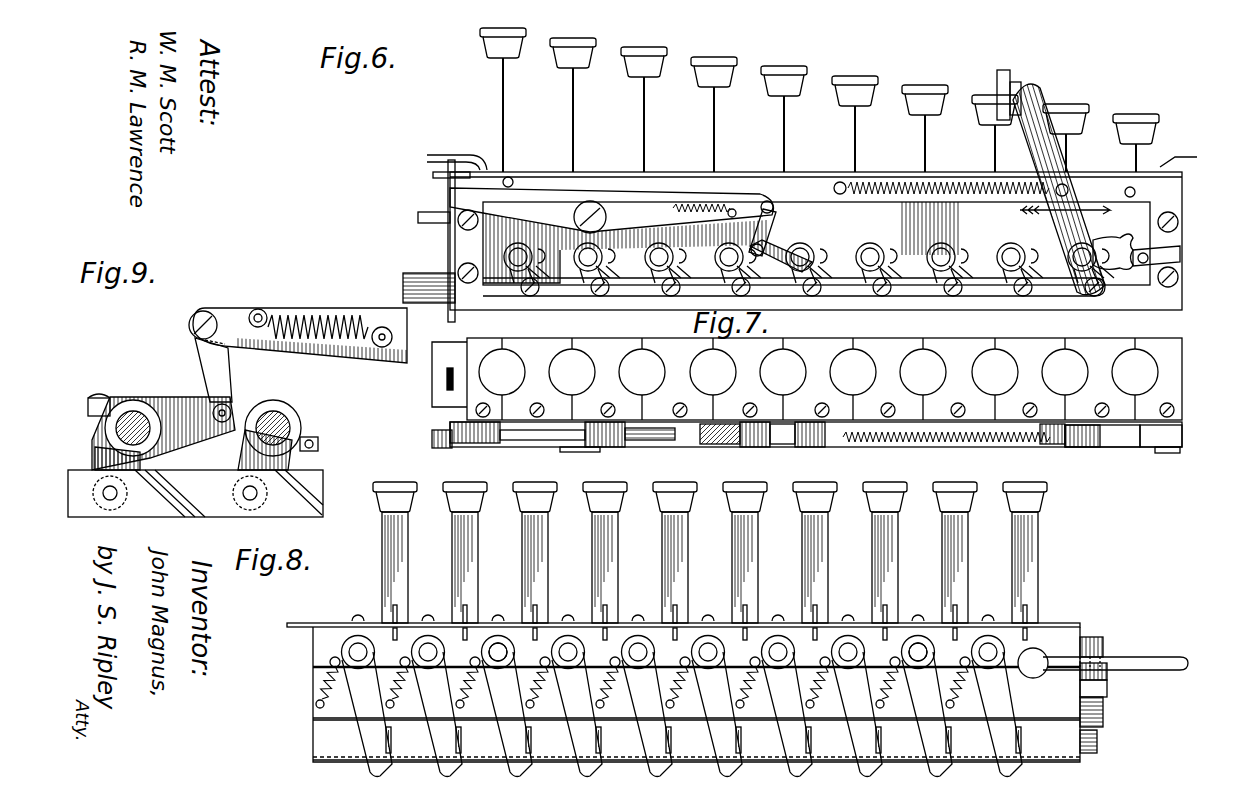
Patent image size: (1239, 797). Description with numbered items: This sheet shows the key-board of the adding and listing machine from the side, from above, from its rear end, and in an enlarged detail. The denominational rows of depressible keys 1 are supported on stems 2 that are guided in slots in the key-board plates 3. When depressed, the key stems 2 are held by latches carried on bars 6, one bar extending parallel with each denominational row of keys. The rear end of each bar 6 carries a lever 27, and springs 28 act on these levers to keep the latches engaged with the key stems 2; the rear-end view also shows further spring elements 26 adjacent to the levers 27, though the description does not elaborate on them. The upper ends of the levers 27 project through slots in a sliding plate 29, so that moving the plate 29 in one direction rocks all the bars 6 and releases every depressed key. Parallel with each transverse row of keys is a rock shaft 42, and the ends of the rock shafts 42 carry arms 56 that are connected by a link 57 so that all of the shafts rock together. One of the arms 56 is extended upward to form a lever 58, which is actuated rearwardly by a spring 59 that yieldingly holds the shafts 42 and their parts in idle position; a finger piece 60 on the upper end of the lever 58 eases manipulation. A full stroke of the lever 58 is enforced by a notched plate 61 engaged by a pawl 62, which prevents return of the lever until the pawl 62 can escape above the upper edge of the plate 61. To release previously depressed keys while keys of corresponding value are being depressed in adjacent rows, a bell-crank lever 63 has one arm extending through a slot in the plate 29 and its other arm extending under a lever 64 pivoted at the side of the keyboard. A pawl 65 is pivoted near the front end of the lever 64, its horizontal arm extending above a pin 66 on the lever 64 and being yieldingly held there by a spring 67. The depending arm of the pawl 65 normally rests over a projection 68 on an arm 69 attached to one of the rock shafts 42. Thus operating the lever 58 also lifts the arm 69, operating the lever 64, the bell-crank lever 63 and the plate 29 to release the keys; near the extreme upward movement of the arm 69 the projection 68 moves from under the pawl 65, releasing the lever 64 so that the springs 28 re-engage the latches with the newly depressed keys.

In FIG. 6, the depressible keys 1 is at (790, 70).
In FIG. 7, the depressible keys 1 is at (920, 372).
In FIG. 8, the depressible keys 1 is at (1040, 500).
In FIG. 6, the stems 2 is at (784, 125).
In FIG. 8, the stems 2 is at (590, 553).
In FIG. 6, the key-board plates 3 is at (612, 172).
In FIG. 7, the key-board plates 3 is at (807, 379).
In FIG. 8, the key-board plates 3 is at (335, 762).
In FIG. 8, the bars 6 is at (498, 650).
In FIG. 8, the spring 26 is at (672, 690).
In FIG. 6, the lever 27 is at (790, 256).
In FIG. 8, the lever 27 is at (358, 712).
In FIG. 8, the springs 28 is at (320, 700).
In FIG. 6, the sliding plate 29 is at (433, 176).
In FIG. 7, the sliding plate 29 is at (437, 385).
In FIG. 8, the sliding plate 29 is at (325, 612).
In FIG. 6, the rock shaft 42 is at (870, 257).
In FIG. 7, the rock shaft 42 is at (818, 445).
In FIG. 9, the rock shaft 42 is at (133, 428).
In FIG. 8, the rock shaft 42 is at (1103, 710).
In FIG. 6, the arms 56 is at (656, 258).
In FIG. 7, the arms 56 is at (618, 440).
In FIG. 9, the arms 56 is at (110, 457).
In FIG. 8, the arms 56 is at (1103, 727).
In FIG. 6, the link 57 is at (566, 297).
In FIG. 7, the link 57 is at (843, 440).
In FIG. 9, the link 57 is at (205, 510).
In FIG. 8, the link 57 is at (1097, 750).
In FIG. 6, the lever 58 is at (1075, 200).
In FIG. 7, the lever 58 is at (1053, 421).
In FIG. 6, the spring 59 is at (907, 194).
In FIG. 7, the spring 59 is at (895, 445).
In FIG. 6, the finger piece 60 is at (1003, 70).
In FIG. 6, the notched plate 61 is at (1113, 251).
In FIG. 7, the notched plate 61 is at (1105, 447).
In FIG. 6, the pawl 62 is at (1150, 258).
In FIG. 7, the pawl 62 is at (1148, 447).
In FIG. 6, the bell-crank lever 63 is at (418, 216).
In FIG. 7, the bell-crank lever 63 is at (432, 435).
In FIG. 8, the bell-crank lever 63 is at (1135, 666).
In FIG. 6, the lever 64 is at (528, 195).
In FIG. 7, the lever 64 is at (480, 445).
In FIG. 9, the lever 64 is at (356, 350).
In FIG. 8, the lever 64 is at (1103, 647).
In FIG. 6, the pawl 65 is at (768, 230).
In FIG. 7, the pawl 65 is at (755, 445).
In FIG. 9, the pawl 65 is at (195, 350).
In FIG. 6, the pin 66 is at (733, 208).
In FIG. 9, the pin 66 is at (262, 328).
In FIG. 6, the spring 67 is at (696, 203).
In FIG. 7, the spring 67 is at (700, 440).
In FIG. 9, the spring 67 is at (340, 325).
In FIG. 6, the projection 68 is at (752, 248).
In FIG. 9, the projection 68 is at (223, 423).
In FIG. 6, the arm 69 is at (775, 270).
In FIG. 7, the arm 69 is at (778, 424).
In FIG. 9, the arm 69 is at (163, 433).